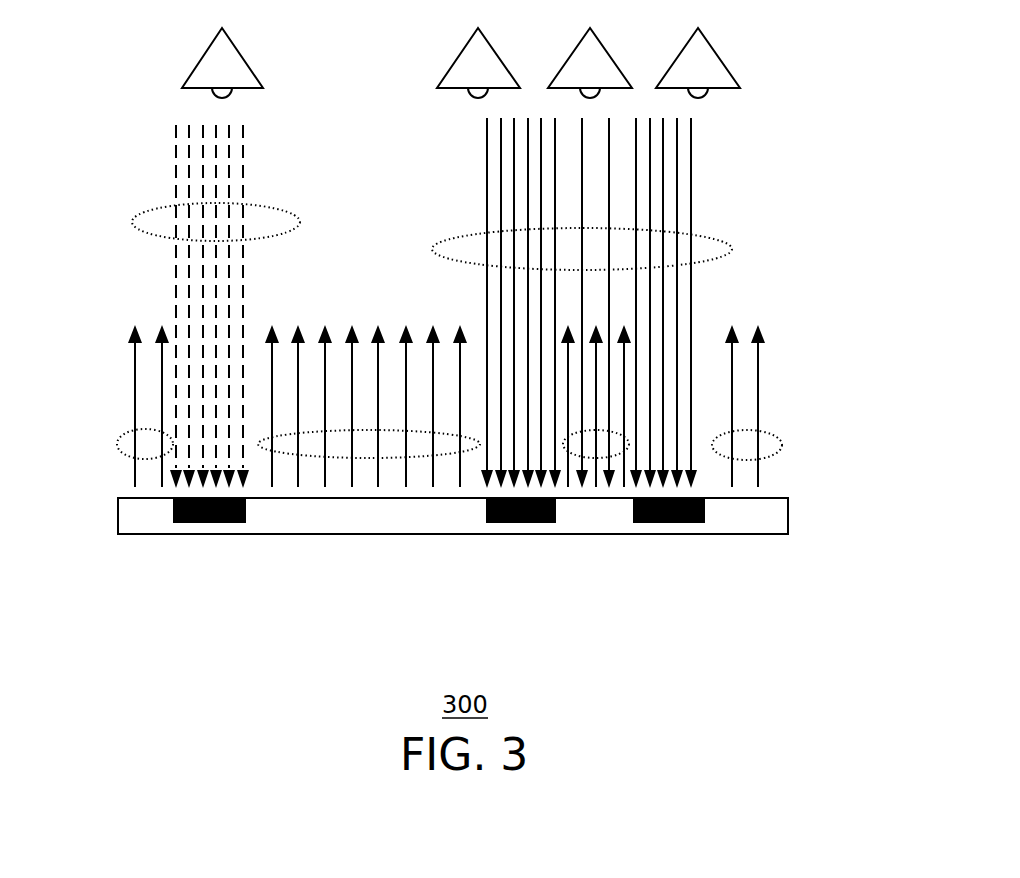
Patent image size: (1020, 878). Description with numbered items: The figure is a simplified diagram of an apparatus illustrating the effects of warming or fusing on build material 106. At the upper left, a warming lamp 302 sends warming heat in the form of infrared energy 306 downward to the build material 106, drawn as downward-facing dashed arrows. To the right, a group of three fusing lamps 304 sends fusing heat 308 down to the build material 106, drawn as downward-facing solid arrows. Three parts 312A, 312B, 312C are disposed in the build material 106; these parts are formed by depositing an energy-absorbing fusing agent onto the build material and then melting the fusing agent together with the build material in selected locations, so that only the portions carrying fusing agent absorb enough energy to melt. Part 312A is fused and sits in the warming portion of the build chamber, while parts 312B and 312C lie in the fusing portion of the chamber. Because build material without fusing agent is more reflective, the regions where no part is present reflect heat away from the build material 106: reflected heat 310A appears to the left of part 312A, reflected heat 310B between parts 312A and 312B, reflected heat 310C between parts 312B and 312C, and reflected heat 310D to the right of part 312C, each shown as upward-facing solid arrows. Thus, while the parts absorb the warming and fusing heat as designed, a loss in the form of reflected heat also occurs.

The warming lamp 302 is at (200, 62).
The fusing lamps 304 is at (722, 60).
The infrared energy 306 is at (140, 213).
The fusing heat 308 is at (731, 248).
The reflected heat 310A is at (120, 433).
The reflected heat 310B is at (368, 460).
The reflected heat 310C is at (617, 458).
The reflected heat 310D is at (770, 433).
The part 312A is at (207, 566).
The part 312B is at (518, 566).
The part 312C is at (661, 566).
The build material 106 is at (789, 514).